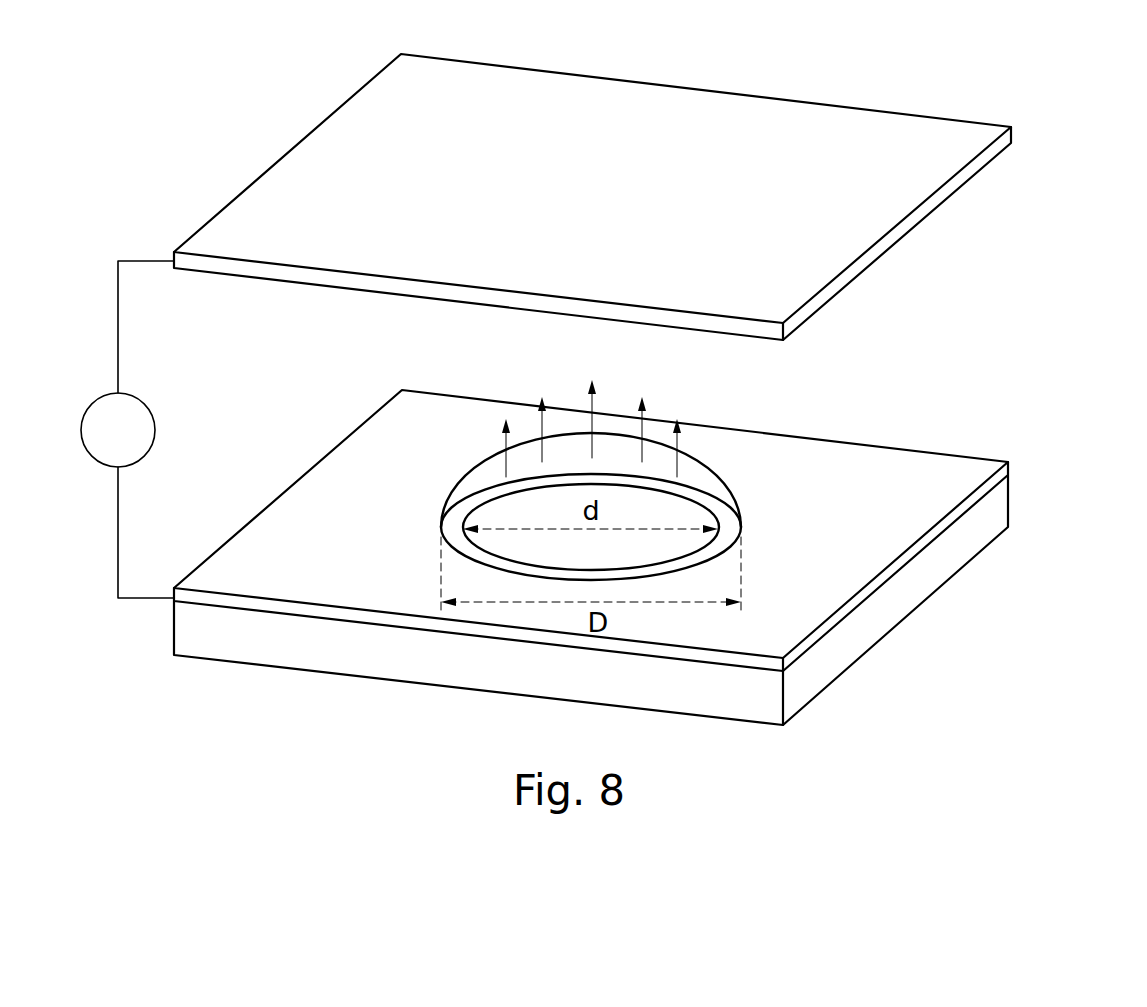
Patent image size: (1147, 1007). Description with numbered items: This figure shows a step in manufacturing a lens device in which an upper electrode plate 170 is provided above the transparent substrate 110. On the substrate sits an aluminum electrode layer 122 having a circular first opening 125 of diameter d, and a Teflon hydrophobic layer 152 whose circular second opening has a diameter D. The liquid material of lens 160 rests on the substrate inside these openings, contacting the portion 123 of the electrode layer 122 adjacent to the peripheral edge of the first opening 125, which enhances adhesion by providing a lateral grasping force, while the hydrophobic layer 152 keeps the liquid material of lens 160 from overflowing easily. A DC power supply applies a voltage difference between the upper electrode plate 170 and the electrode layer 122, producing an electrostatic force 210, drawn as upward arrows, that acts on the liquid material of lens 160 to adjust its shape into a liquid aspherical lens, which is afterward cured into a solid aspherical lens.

The transparent substrate 110 is at (1003, 503).
The electrode layer 122 is at (1008, 468).
The portion of the electrode layer 123 is at (733, 512).
The first opening 125 is at (504, 505).
The hydrophobic layer 152 is at (952, 465).
The liquid material of lens 160 is at (452, 492).
The upper electrode plate 170 is at (963, 175).
The electrostatic force 210 is at (598, 403).